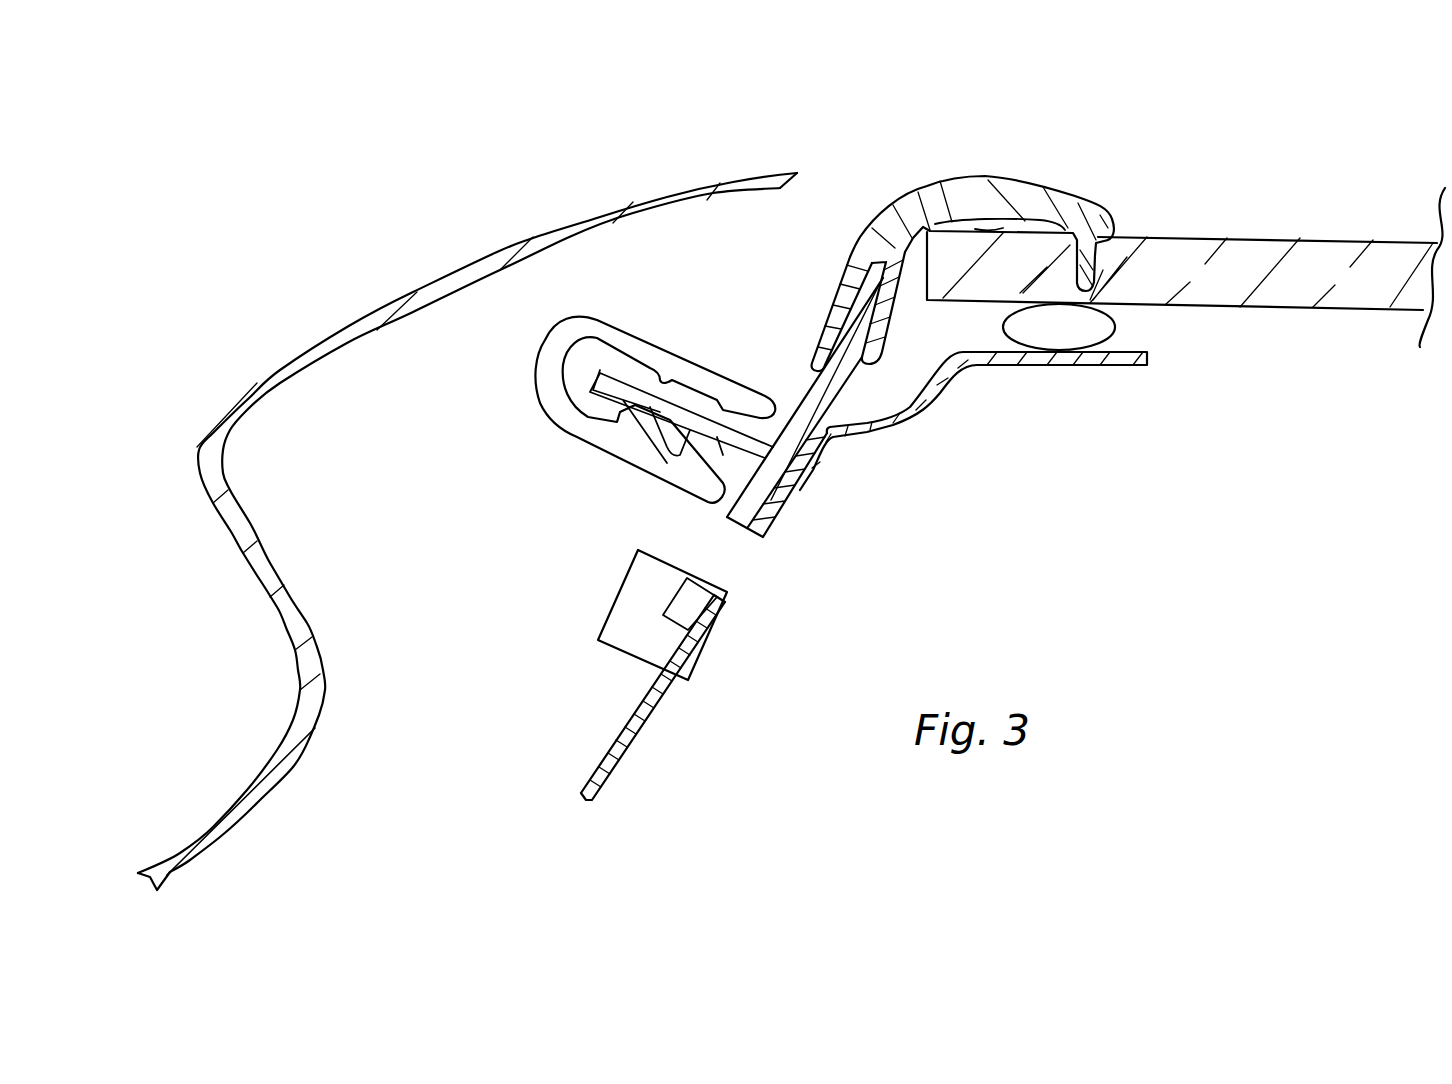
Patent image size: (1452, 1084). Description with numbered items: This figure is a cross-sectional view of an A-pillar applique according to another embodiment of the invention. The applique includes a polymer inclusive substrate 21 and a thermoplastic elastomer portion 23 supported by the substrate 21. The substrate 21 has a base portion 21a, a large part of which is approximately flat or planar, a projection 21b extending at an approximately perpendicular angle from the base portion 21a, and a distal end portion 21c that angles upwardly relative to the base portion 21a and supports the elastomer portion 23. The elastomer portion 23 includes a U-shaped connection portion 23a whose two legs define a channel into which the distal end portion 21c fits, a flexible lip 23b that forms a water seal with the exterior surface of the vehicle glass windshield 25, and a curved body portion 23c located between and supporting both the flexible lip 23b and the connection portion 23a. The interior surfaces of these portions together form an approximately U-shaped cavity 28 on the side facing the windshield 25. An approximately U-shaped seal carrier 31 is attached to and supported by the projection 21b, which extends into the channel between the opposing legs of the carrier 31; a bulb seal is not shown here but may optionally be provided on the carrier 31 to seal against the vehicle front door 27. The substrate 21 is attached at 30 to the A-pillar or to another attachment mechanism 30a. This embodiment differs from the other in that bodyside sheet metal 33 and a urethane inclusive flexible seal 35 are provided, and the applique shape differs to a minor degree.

The substrate 21 is at (772, 468).
The base portion 21a is at (823, 393).
The projection 21b is at (653, 410).
The distal end portion 21c is at (863, 298).
The thermoplastic elastomer portion 23 is at (970, 182).
The U-shaped connection portion 23a is at (857, 262).
The flexible lip 23b is at (1090, 267).
The curved body portion 23c is at (1010, 190).
The vehicle glass windshield 25 is at (1253, 253).
The vehicle front door 27 is at (497, 250).
The U-shaped cavity 28 is at (1000, 227).
The attachment location 30 is at (714, 548).
The attachment mechanism 30a is at (670, 580).
The U-shaped seal carrier 31 is at (545, 352).
The bodyside sheet metal 33 is at (860, 428).
The urethane inclusive flexible seal 35 is at (1050, 320).